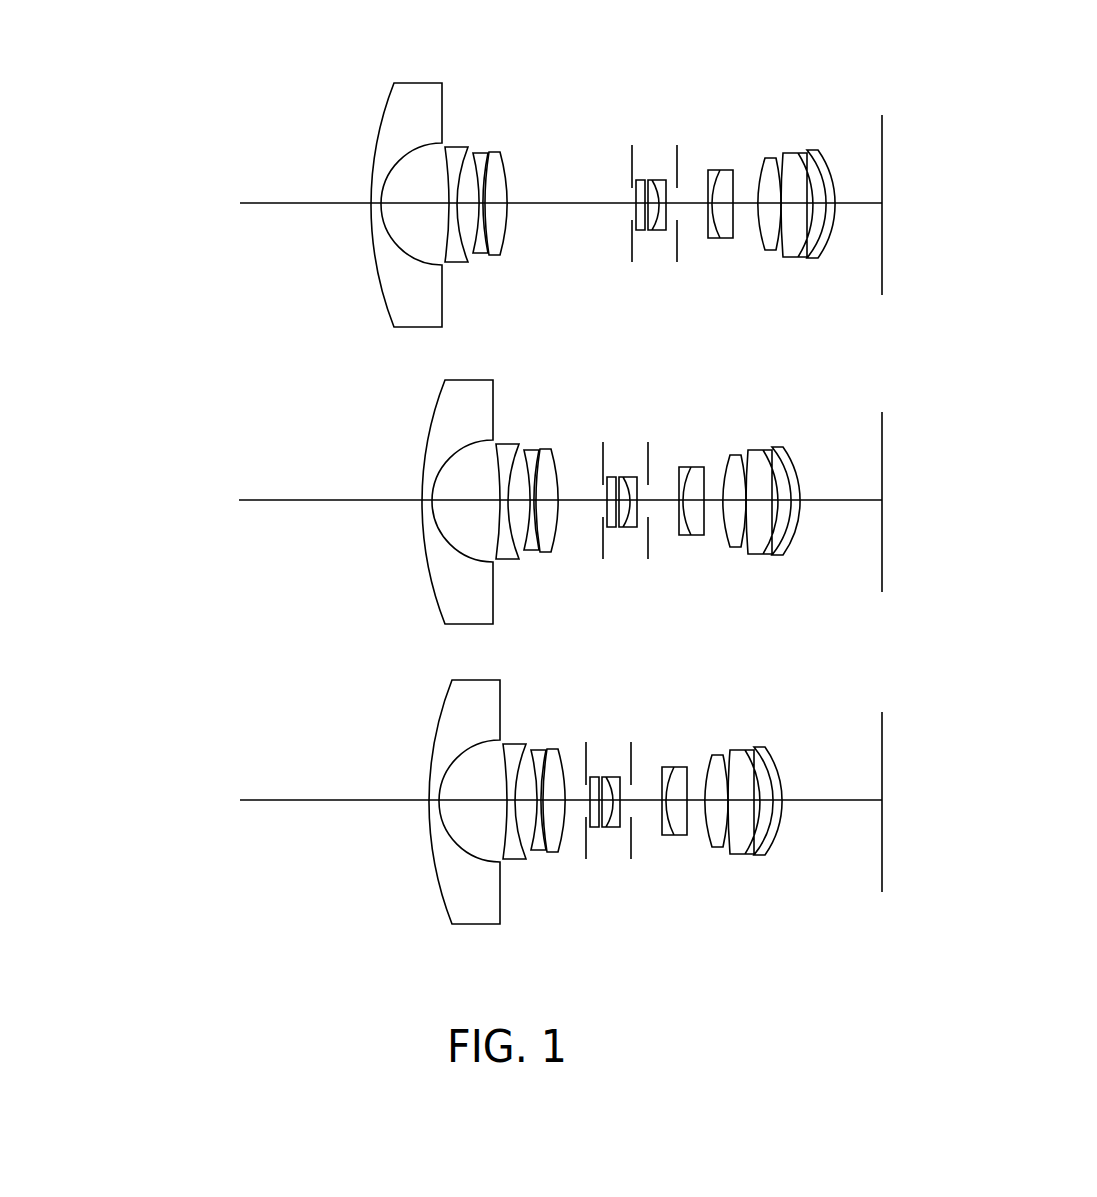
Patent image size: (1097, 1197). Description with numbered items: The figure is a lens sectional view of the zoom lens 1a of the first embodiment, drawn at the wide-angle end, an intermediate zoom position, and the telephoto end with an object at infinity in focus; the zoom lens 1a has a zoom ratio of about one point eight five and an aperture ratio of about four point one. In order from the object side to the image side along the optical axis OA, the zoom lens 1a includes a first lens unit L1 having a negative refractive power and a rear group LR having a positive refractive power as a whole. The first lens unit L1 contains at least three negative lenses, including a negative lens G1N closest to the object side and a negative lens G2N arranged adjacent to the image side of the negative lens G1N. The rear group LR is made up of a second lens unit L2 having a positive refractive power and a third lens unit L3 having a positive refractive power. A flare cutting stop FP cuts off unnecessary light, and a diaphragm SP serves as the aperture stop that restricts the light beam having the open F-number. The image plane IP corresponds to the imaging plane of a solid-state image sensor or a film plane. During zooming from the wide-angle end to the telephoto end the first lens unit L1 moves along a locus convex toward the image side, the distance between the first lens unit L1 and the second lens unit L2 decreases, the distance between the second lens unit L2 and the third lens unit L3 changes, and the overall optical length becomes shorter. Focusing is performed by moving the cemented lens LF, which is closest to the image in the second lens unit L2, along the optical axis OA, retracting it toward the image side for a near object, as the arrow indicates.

The zoom lens 1a is at (502, 490).
The first lens unit L1 is at (468, 492).
The rear group LR is at (718, 443).
The second lens unit L2 is at (676, 466).
The third lens unit L3 is at (770, 464).
The negative lens G1N is at (428, 925).
The negative lens G2N is at (522, 892).
The flare cutting stop FP is at (632, 264).
The diaphragm SP is at (677, 264).
The cemented lens LF is at (697, 273).
The image plane IP is at (882, 173).
The optical axis OA is at (560, 543).